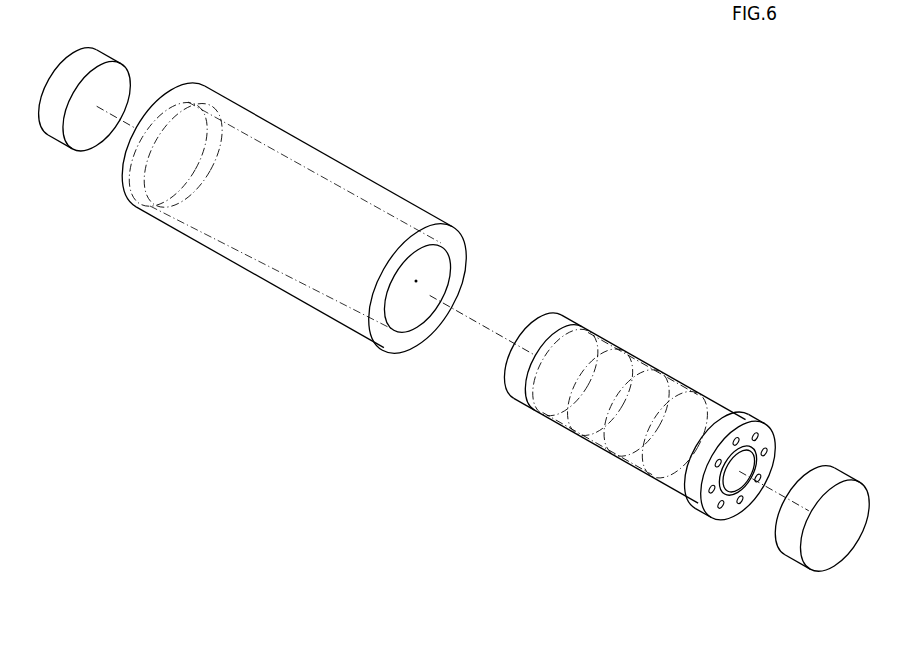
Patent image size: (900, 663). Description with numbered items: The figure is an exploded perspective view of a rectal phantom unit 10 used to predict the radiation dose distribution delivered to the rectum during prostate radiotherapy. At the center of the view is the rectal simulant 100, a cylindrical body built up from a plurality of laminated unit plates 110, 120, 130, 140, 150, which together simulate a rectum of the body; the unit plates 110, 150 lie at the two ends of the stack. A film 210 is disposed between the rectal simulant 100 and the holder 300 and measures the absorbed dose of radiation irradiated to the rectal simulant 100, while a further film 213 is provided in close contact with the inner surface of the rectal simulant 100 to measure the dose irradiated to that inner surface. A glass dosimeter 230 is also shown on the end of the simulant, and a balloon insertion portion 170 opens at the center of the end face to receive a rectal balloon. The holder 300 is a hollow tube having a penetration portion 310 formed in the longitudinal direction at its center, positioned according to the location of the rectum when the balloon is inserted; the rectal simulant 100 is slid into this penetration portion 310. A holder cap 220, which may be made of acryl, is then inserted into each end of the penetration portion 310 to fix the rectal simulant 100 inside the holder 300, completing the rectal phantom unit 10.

The rectal phantom unit 10 is at (453, 300).
The rectal simulant 100 is at (477, 412).
The unit plate 110 is at (692, 475).
The unit plate 120 is at (645, 428).
The unit plate 130 is at (625, 412).
The unit plate 140 is at (575, 405).
The unit plate 150 is at (532, 405).
The balloon insertion portion 170 is at (745, 460).
The film 210 is at (652, 382).
The film 213 is at (717, 513).
The holder cap 220 is at (108, 72).
The glass dosimeter 230 is at (742, 440).
The holder 300 is at (313, 153).
The penetration portion 310 is at (417, 280).